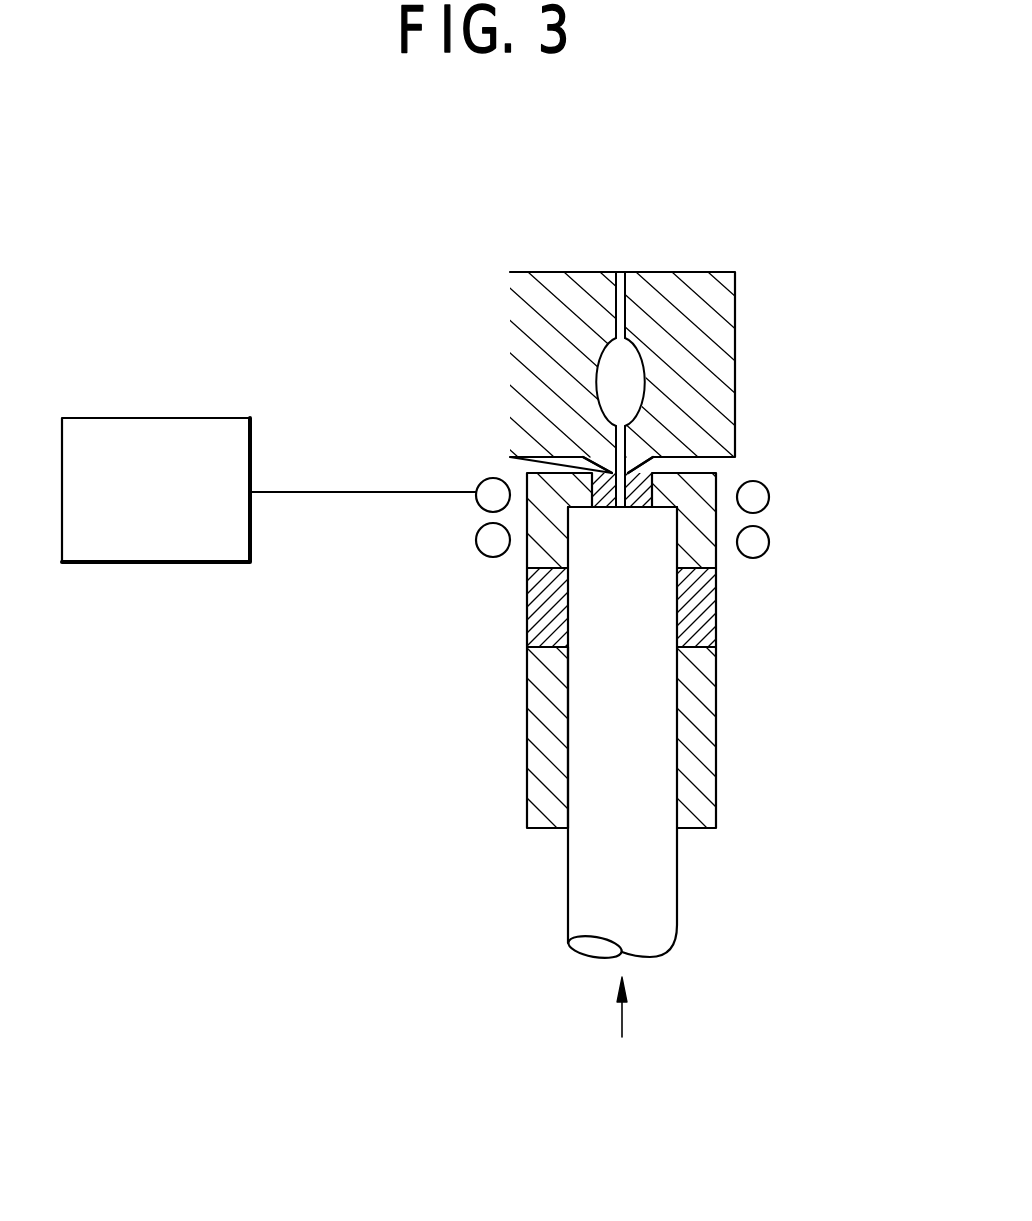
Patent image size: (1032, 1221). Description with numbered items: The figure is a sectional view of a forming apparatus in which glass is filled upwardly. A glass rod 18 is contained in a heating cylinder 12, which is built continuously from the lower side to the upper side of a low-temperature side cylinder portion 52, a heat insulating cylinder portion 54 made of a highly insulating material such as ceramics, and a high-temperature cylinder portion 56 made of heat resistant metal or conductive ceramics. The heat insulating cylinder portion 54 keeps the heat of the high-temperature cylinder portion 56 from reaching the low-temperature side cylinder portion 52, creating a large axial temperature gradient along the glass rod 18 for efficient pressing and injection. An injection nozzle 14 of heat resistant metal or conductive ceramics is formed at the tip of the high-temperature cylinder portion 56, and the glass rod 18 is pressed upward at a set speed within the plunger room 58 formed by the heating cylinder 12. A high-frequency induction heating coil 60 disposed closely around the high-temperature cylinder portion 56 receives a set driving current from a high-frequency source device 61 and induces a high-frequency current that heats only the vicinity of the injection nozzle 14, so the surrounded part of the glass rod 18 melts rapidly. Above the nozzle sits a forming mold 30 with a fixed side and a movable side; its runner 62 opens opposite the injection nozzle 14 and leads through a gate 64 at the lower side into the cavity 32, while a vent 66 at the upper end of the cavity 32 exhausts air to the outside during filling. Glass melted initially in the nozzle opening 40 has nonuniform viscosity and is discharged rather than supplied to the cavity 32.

The heating cylinder 12 is at (467, 672).
The injection nozzle 14 is at (530, 477).
The glass rod 18 is at (662, 895).
The forming mold 30 is at (720, 437).
The cavity 32 is at (637, 372).
The nozzle opening 40 is at (640, 443).
The low-temperature side cylinder portion 52 is at (703, 747).
The heat insulating cylinder portion 54 is at (705, 625).
The high-temperature cylinder portion 56 is at (716, 518).
The plunger room 58 is at (572, 700).
The high-frequency induction heating coil 60 is at (755, 540).
The high-frequency source device 61 is at (160, 562).
The runner 62 is at (607, 447).
The gate 64 is at (640, 425).
The vent 66 is at (627, 295).